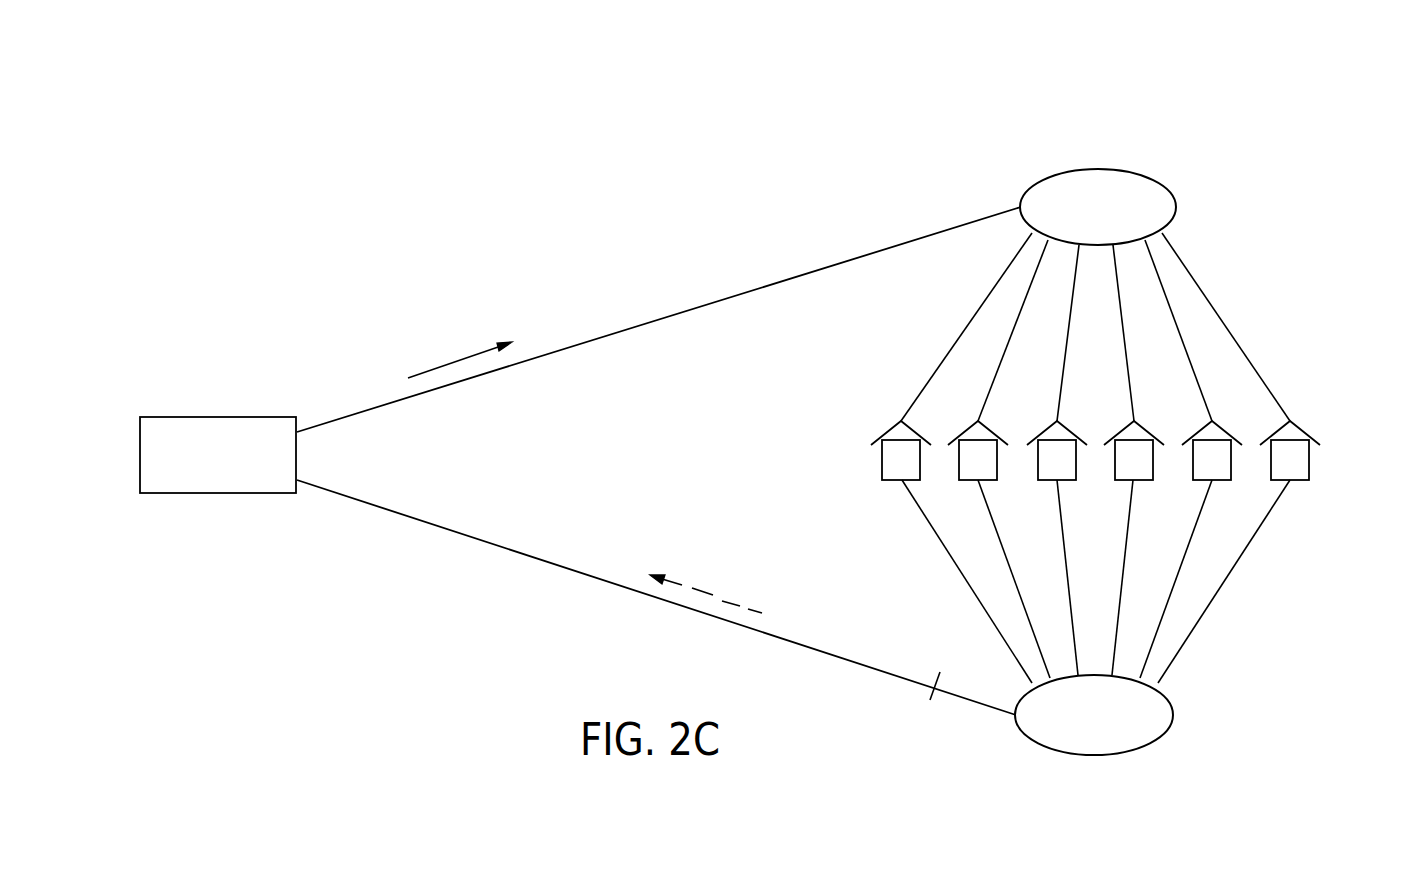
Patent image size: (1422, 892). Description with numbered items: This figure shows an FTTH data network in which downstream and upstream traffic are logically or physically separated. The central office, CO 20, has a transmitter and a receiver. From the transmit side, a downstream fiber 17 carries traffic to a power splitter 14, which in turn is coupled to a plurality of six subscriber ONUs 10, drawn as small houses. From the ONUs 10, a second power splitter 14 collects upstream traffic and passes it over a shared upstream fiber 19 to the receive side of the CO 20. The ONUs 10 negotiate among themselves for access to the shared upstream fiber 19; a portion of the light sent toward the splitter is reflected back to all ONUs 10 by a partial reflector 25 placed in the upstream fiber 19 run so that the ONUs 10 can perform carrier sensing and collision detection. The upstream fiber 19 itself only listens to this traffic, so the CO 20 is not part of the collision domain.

The ONUs 10 is at (1310, 460).
The downstream power splitter 14 is at (1115, 167).
The downstream fiber 17 is at (635, 325).
The upstream fiber 19 is at (518, 549).
The CO 20 is at (264, 416).
The partial reflector 25 is at (928, 697).